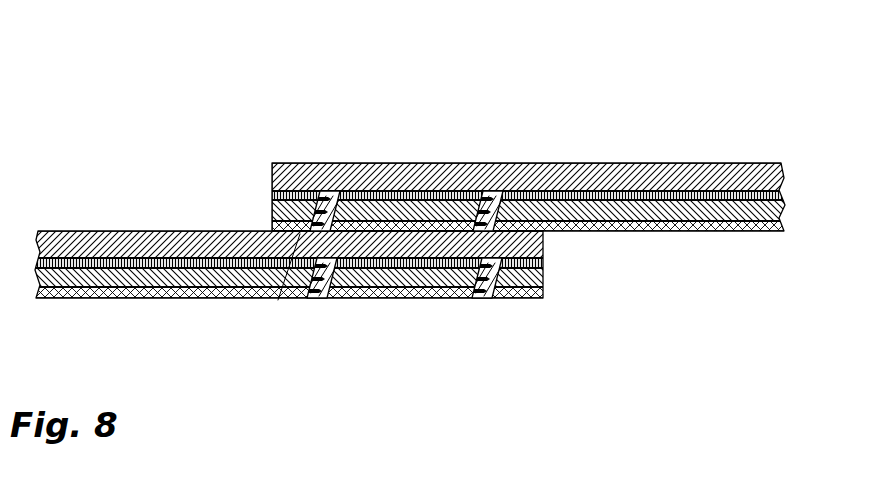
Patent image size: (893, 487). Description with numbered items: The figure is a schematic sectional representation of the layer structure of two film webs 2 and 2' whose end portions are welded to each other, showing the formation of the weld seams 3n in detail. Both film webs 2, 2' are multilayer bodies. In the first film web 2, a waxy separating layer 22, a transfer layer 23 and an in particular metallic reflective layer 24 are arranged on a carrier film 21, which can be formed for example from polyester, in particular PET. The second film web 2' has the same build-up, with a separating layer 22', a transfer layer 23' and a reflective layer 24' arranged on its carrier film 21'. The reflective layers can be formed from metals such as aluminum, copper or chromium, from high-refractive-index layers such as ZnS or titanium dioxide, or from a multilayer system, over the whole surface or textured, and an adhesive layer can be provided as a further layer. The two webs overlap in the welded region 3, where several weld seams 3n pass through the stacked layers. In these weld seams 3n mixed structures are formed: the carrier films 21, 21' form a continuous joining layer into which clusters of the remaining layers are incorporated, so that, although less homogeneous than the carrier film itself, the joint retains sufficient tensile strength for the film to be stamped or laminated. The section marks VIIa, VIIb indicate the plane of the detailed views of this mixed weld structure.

The film web 2 is at (287, 180).
The film web 2' is at (531, 254).
The weld seam 3 is at (408, 235).
The weld seams 3n is at (322, 318).
The carrier film 21 is at (287, 160).
The separating layer 22 is at (287, 187).
The transfer layer 23 is at (287, 218).
The reflective layer 24 is at (287, 246).
The carrier film 21' is at (529, 221).
The separating layer 22' is at (529, 257).
The transfer layer 23' is at (529, 284).
The reflective layer 24' is at (529, 317).
The section line VIIa is at (196, 299).
The section line VIIb is at (278, 300).